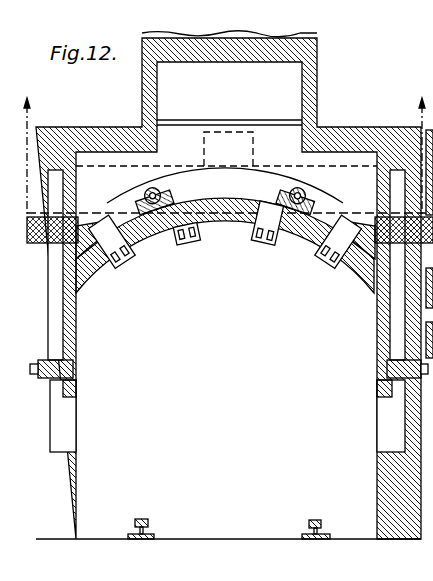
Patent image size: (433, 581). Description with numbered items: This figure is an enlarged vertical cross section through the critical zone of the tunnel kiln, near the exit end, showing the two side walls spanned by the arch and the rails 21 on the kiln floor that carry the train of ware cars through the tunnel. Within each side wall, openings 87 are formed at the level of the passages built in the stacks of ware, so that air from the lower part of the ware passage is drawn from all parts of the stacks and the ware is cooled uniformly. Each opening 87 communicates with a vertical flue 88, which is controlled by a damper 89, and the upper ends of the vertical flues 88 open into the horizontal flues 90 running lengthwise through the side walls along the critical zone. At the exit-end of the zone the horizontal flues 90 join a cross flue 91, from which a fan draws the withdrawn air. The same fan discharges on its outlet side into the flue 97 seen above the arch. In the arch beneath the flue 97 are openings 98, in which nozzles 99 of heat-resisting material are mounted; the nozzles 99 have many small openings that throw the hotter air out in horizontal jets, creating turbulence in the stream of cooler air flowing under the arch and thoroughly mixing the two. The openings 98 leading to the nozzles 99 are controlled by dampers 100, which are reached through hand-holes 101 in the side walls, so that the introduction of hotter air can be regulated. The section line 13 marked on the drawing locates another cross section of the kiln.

The section line 13- 13 is at (228, 225).
The rails 21 is at (310, 521).
The openings 87 is at (70, 430).
The vertical flues 88 is at (63, 392).
The damper 89 is at (73, 370).
The horizontal flues 90 is at (55, 275).
The cross flue 91 is at (104, 165).
The flue 97 is at (242, 72).
The openings 98 is at (150, 205).
The nozzles 99 is at (183, 244).
The dampers 100 is at (167, 192).
The hand-holes 101 is at (88, 272).